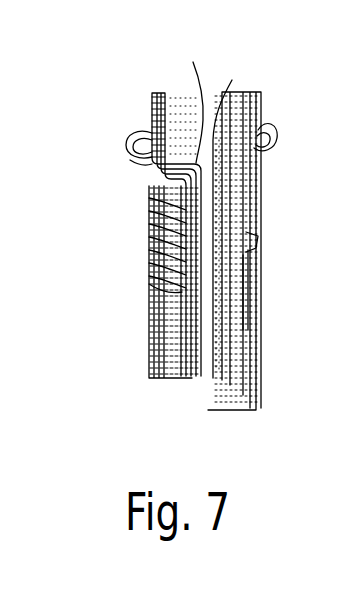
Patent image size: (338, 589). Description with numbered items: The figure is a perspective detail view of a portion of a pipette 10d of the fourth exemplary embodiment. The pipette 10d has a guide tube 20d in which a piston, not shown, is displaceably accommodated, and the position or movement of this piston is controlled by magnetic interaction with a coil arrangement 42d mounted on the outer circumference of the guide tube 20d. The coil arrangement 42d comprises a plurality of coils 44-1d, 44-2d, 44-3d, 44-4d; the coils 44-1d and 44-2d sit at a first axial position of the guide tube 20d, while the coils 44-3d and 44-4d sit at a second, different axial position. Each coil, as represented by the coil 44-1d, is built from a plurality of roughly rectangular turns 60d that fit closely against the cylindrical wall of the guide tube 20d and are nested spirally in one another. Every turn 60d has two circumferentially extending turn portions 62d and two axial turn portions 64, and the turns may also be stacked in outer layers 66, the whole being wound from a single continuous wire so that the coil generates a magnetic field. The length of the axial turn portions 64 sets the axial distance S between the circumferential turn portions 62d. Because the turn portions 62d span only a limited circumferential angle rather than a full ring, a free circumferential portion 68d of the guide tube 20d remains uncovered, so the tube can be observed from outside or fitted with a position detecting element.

The pipette 10d is at (278, 70).
The guide tube 20d is at (150, 100).
The coil arrangement 42d is at (122, 113).
The coil 44-1d is at (118, 164).
The coil 44-2d is at (263, 247).
The coil 44-3d is at (148, 283).
The coil 44-4d is at (257, 306).
The turn 60d is at (195, 95).
The circumferentially extending turn portion 62d is at (148, 213).
The axial turn portion 64 is at (148, 196).
The outer layer 66 is at (279, 116).
The free circumferential portion 68d is at (239, 213).
The distance S is at (281, 153).